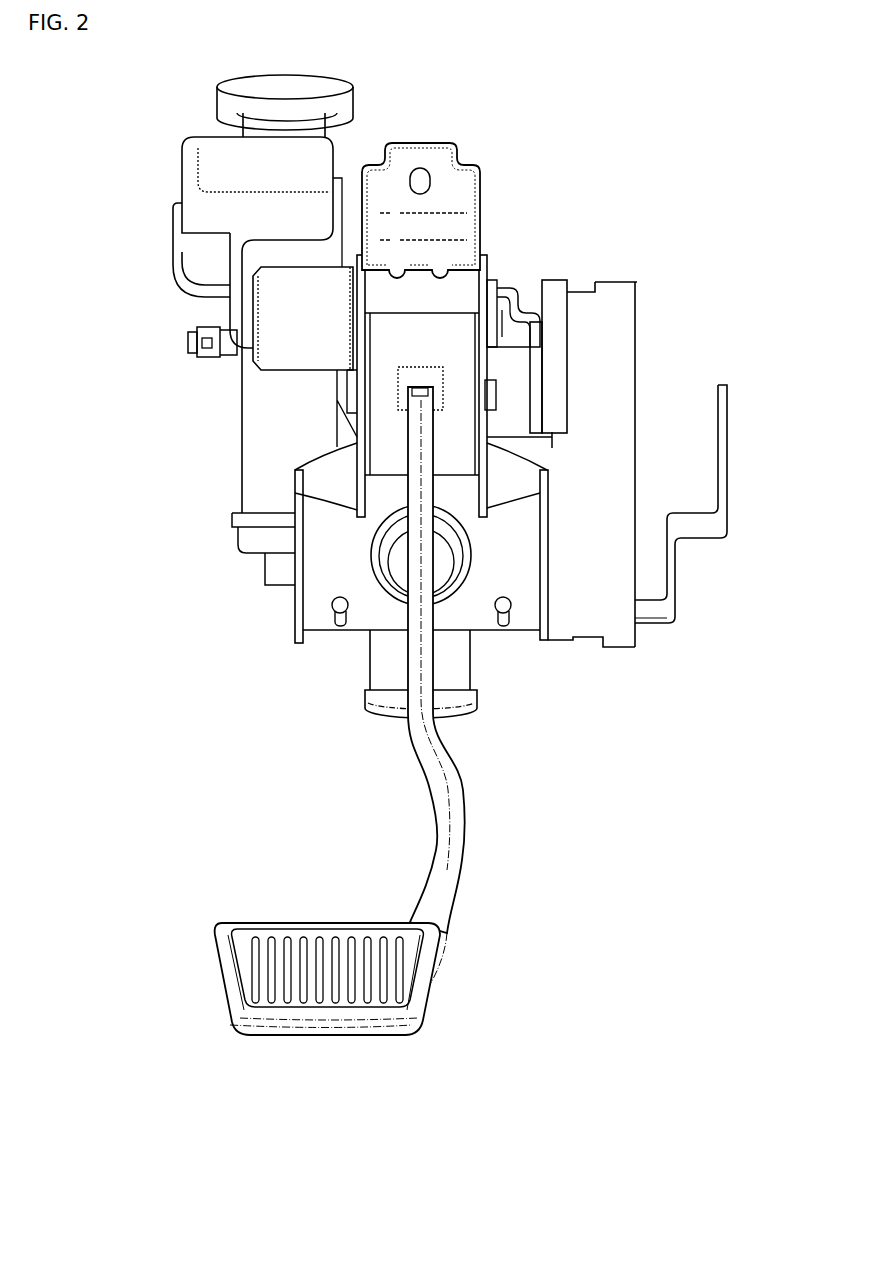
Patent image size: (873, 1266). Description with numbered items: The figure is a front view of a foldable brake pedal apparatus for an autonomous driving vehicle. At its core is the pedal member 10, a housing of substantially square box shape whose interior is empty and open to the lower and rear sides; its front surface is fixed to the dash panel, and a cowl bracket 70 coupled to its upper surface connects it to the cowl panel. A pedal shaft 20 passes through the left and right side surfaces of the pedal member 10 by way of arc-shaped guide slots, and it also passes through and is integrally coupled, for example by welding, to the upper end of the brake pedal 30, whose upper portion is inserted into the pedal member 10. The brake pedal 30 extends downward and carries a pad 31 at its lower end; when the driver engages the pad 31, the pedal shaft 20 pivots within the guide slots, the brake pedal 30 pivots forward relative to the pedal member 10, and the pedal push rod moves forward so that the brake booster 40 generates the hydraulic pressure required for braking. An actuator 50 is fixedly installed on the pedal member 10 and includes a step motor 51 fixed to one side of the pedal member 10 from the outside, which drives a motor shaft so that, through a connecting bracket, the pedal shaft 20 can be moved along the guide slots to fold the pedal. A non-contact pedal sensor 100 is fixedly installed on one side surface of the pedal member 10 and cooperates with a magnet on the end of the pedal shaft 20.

The pedal member 10 is at (291, 615).
The pedal shaft 20 is at (487, 395).
The brake pedal 30 is at (457, 825).
The pad 31 is at (323, 1017).
The brake booster 40 is at (620, 467).
The actuator 50 is at (250, 293).
The step motor 51 is at (288, 355).
The cowl bracket 70 is at (457, 178).
The non-contact pedal sensor 100 is at (553, 345).